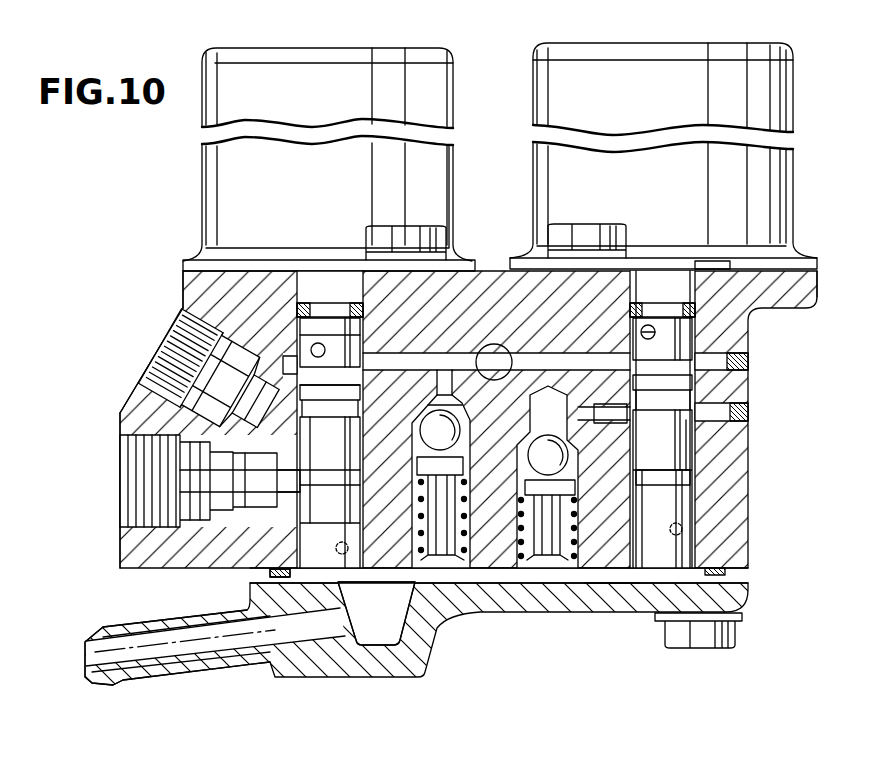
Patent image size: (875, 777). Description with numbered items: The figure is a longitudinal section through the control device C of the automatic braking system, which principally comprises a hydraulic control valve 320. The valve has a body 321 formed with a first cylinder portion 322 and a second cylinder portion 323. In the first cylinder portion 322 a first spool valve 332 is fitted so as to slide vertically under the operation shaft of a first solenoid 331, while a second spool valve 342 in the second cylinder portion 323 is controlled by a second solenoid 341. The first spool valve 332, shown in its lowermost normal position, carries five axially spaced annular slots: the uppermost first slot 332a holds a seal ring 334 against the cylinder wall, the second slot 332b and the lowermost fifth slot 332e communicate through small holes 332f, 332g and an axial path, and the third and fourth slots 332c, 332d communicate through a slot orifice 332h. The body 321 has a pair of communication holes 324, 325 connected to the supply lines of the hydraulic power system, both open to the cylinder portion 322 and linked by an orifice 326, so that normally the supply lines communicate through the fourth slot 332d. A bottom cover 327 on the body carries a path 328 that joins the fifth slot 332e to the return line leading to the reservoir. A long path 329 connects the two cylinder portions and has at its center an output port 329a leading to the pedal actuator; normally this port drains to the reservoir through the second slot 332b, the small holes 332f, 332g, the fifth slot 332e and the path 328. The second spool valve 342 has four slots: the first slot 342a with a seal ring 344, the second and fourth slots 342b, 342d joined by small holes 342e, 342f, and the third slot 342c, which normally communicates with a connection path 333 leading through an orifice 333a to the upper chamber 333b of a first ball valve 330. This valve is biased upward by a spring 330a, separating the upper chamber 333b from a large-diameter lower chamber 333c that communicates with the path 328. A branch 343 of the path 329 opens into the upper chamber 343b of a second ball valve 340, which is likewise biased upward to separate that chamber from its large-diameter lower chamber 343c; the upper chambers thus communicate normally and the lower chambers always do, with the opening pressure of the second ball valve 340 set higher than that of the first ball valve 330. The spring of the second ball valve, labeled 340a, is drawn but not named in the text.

The hydraulic control valve 320 is at (180, 246).
The body 321 is at (806, 296).
The first cylinder portion 322 is at (222, 570).
The second cylinder portion 323 is at (692, 455).
The communication hole 324 is at (168, 348).
The communication hole 325 is at (140, 470).
The orifice 326 is at (240, 432).
The bottom cover 327 is at (645, 613).
The path 328 is at (175, 655).
The long path 329 is at (548, 354).
The output port 329a is at (496, 345).
The first ball valve 330 is at (565, 455).
The spring 330a is at (608, 606).
The first solenoid 331 is at (370, 62).
The first spool valve 332 is at (313, 300).
The first slot 332a is at (335, 302).
The second slot 332b is at (293, 350).
The third slot 332c is at (283, 366).
The fourth slot 332d is at (297, 470).
The fifth slot 332e is at (262, 580).
The small hole 332f is at (300, 312).
The small hole 332g is at (340, 556).
The slot orifice 332h is at (232, 387).
The connection path 333 is at (690, 435).
The orifice 333a is at (582, 405).
The upper chamber 333b is at (530, 410).
The large-diameter lower chamber 333c is at (507, 573).
The seal ring 334 is at (390, 258).
The second ball valve 340 is at (425, 440).
The valve spring 340a is at (462, 572).
The second solenoid 341 is at (707, 58).
The second spool valve 342 is at (668, 302).
The first slot 342a is at (648, 302).
The second slot 342b is at (690, 333).
The third slot 342c is at (690, 388).
The fourth slot 342d is at (690, 505).
The small hole 342e is at (690, 346).
The small hole 342f is at (682, 535).
The branch 343 is at (442, 372).
The upper chamber 343b is at (434, 388).
The large-diameter lower chamber 343c is at (413, 523).
The seal ring 344 is at (705, 268).
The control device C is at (801, 93).